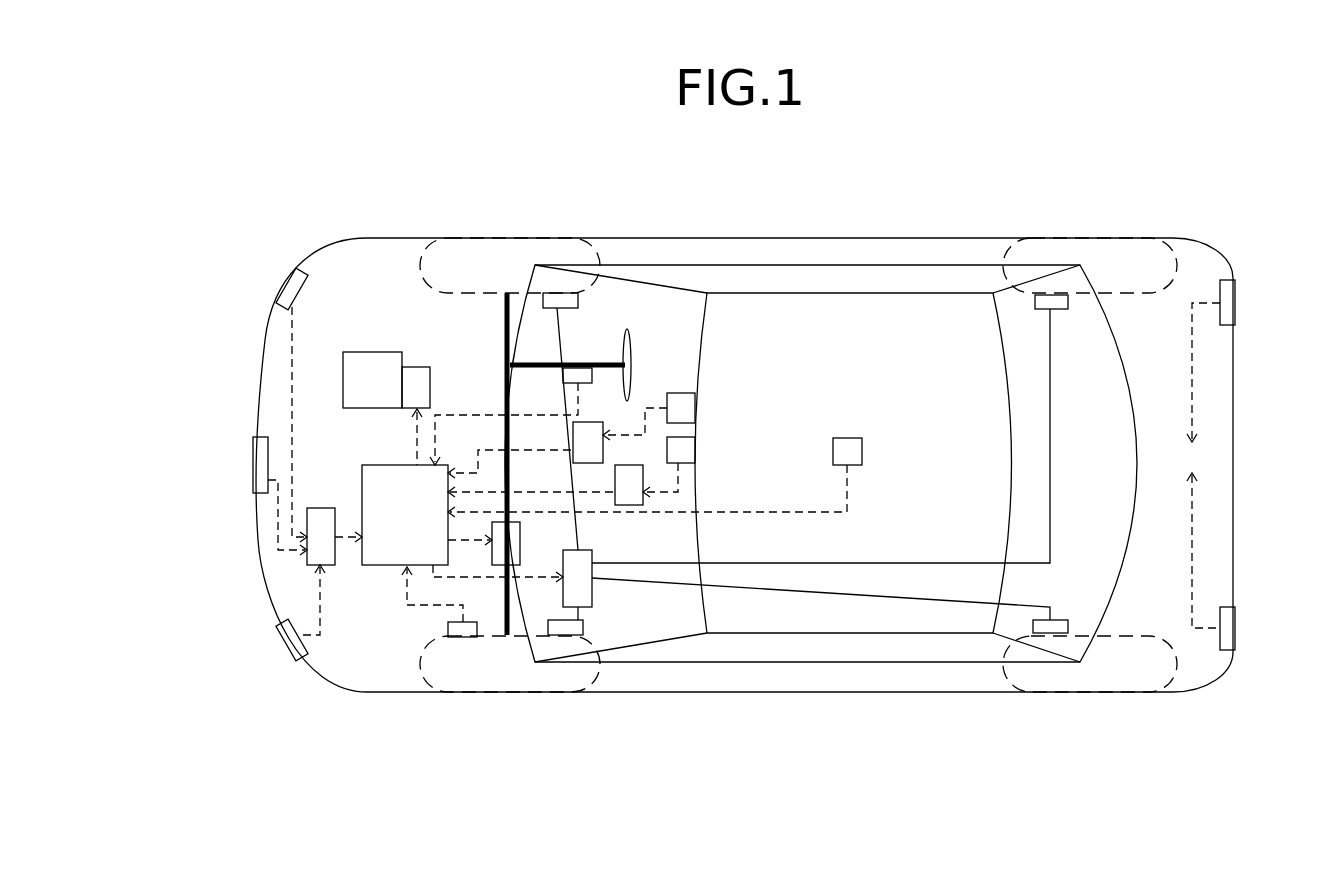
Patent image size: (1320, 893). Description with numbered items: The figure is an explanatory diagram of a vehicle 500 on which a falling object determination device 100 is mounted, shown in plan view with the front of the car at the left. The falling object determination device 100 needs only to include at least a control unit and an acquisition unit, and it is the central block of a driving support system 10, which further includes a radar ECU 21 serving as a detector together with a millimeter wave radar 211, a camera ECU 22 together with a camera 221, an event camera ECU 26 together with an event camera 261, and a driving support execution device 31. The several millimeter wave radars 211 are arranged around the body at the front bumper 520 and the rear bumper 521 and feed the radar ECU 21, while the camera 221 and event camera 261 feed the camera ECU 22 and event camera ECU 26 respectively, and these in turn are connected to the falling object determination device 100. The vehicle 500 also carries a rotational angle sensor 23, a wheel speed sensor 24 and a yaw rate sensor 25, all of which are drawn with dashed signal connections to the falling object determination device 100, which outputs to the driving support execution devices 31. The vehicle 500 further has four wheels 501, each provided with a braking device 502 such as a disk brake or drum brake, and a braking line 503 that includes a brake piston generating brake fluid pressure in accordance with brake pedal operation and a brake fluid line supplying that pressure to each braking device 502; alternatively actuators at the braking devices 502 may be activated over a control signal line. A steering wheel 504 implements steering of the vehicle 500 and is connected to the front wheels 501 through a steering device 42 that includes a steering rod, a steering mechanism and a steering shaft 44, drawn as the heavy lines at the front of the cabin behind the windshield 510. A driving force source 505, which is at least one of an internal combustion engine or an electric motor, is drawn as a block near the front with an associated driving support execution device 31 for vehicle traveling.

The driving support system 10 is at (374, 652).
The vehicle 500 is at (818, 232).
The wheels 501 is at (508, 233).
The braking devices 502 is at (560, 309).
The braking line 503 is at (580, 550).
The steering wheel 504 is at (630, 352).
The driving force source 505 is at (372, 380).
The windshield 510 is at (700, 334).
The front bumper 520 is at (264, 337).
The rear bumper 521 is at (1234, 557).
The radar ECU 21 is at (1214, 465).
The millimeter wave radar 211 is at (290, 280).
The camera ECU 22 is at (545, 485).
The camera 221 is at (698, 444).
The rotational angle sensor 23 is at (584, 384).
The wheel speed sensor 24 is at (448, 627).
The yaw rate sensor 25 is at (655, 477).
The event camera ECU 26 is at (525, 450).
The event camera 261 is at (698, 400).
The driving support execution device 31 is at (497, 487).
The steering device 42 is at (499, 359).
The steering shaft 44 is at (505, 378).
The falling object determination device 100 is at (405, 515).